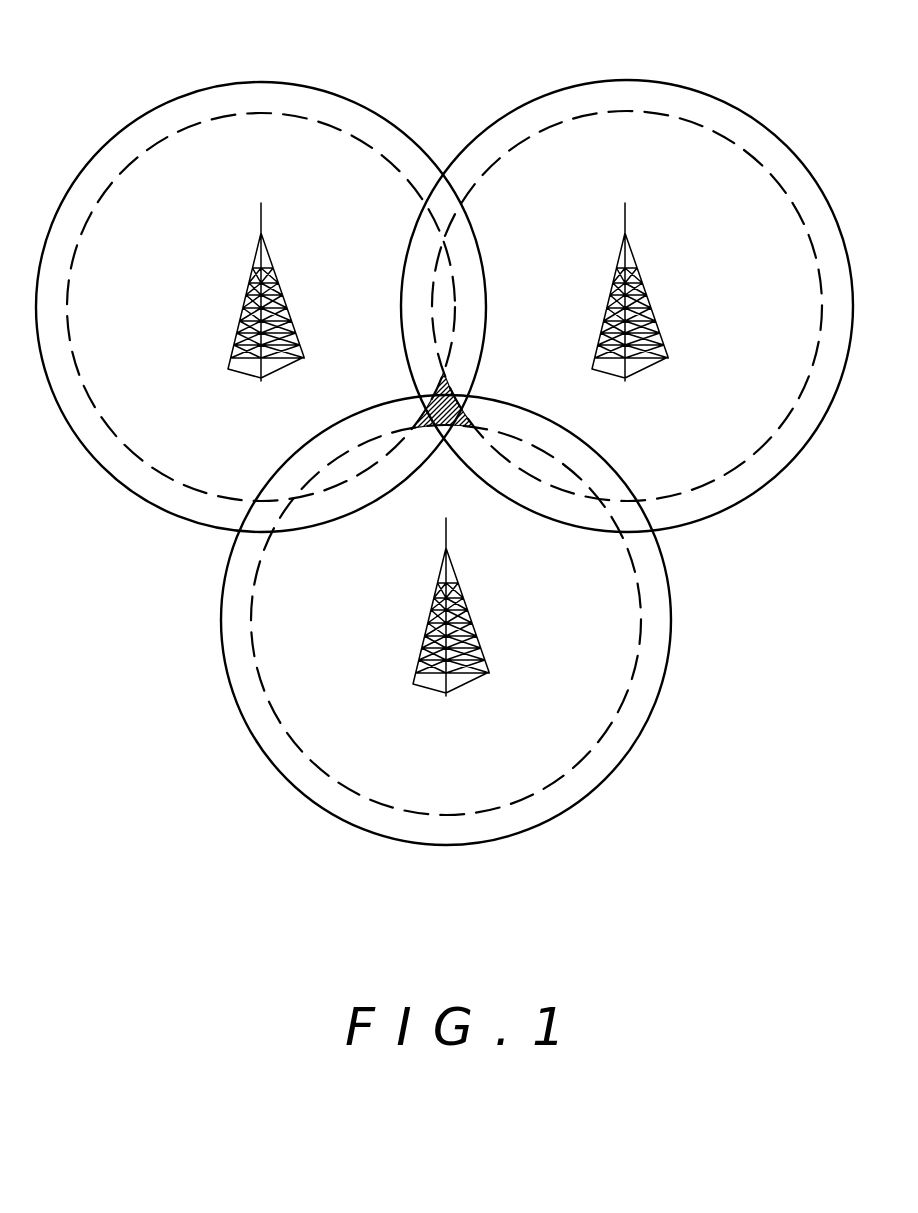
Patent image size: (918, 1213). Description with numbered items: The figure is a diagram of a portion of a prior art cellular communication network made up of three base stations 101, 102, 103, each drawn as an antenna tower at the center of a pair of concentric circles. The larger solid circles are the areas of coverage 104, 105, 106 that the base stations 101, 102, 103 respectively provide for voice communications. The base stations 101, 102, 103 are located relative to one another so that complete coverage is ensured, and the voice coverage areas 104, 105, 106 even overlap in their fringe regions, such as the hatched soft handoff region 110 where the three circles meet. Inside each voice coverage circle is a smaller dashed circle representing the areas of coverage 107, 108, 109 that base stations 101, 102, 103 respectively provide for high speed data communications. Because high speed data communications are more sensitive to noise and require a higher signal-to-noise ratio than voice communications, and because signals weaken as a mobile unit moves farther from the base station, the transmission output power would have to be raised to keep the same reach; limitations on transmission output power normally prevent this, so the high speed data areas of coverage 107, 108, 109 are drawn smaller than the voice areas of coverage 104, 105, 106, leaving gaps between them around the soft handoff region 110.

The base station 101 is at (282, 296).
The base station 102 is at (646, 297).
The base station 103 is at (470, 615).
The area of coverage 104 is at (261, 82).
The area of coverage 105 is at (628, 80).
The area of coverage 106 is at (453, 845).
The area of coverage 107 is at (158, 143).
The area of coverage 108 is at (722, 134).
The area of coverage 109 is at (297, 740).
The soft handoff region 110 is at (437, 418).